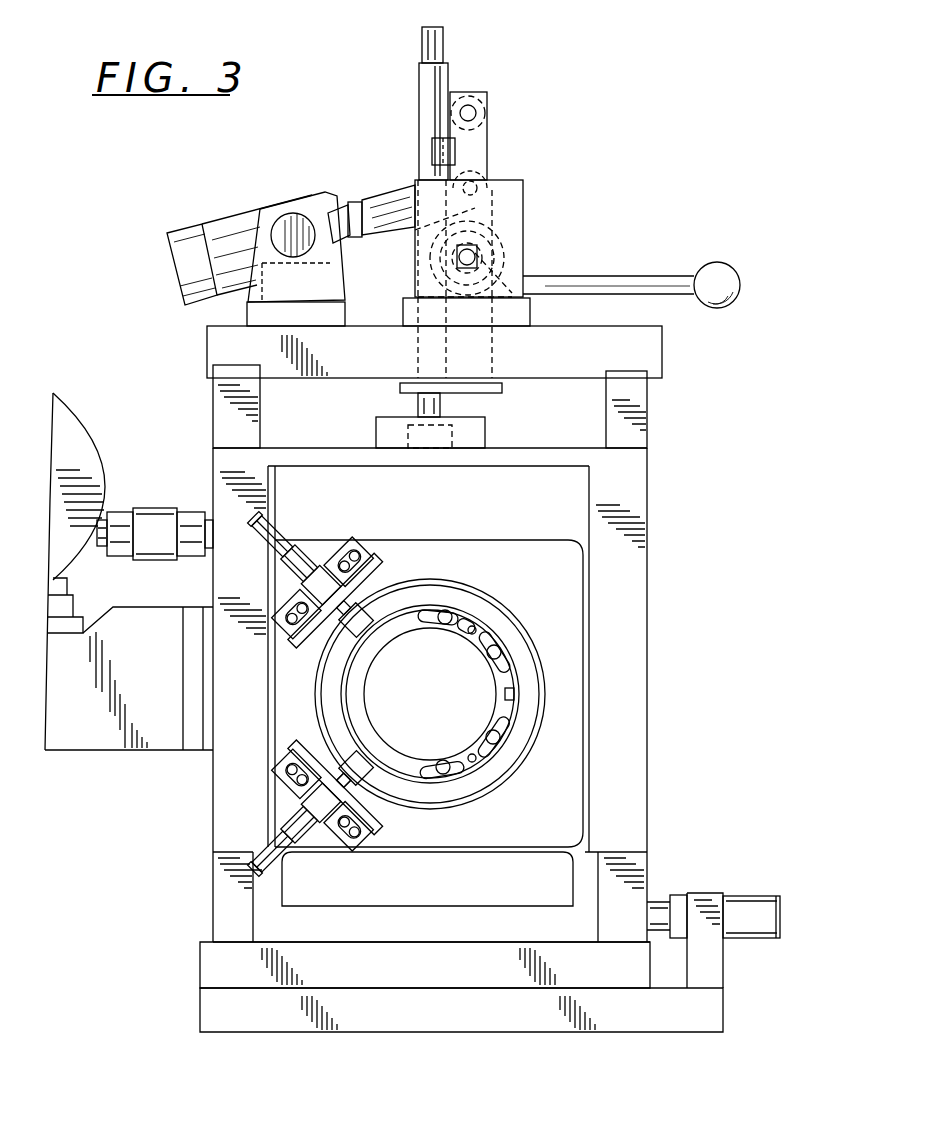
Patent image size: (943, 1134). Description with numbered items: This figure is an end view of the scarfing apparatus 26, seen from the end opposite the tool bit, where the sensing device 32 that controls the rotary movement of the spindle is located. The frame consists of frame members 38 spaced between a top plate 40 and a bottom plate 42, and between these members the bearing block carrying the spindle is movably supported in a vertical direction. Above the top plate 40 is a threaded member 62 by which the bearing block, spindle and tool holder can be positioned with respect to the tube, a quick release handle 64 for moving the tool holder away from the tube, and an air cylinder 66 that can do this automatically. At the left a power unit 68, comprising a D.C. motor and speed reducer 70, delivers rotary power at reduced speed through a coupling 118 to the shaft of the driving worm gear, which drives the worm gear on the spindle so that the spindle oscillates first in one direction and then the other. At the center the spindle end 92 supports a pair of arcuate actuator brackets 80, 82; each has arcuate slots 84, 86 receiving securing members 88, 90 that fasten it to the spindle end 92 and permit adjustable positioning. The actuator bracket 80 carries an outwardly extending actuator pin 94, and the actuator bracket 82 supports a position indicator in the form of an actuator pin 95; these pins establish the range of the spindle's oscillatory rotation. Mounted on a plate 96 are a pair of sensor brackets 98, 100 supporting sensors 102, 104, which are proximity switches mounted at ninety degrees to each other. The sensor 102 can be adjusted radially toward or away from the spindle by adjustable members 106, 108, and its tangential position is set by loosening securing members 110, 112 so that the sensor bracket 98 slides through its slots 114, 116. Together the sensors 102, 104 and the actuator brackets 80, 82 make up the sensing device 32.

The scarfing apparatus 26 is at (662, 774).
The sensing device 32 is at (318, 858).
The frame members 38 is at (213, 486).
The top plate 40 is at (662, 345).
The bottom plate 42 is at (200, 960).
The threaded member 62 is at (443, 36).
The quick release handle 64 is at (626, 284).
The air cylinder 66 is at (222, 222).
The power unit 68 is at (100, 418).
The speed reducer 70 is at (74, 538).
The actuator bracket 80 is at (495, 650).
The actuator bracket 82 is at (482, 748).
The arcuate slot 84 is at (487, 617).
The arcuate slot 86 is at (504, 670).
The securing member 88 is at (446, 614).
The securing member 90 is at (496, 655).
The spindle end 92 is at (360, 720).
The actuator pin 94 is at (474, 628).
The actuator pin 95 is at (474, 760).
The plate 96 is at (583, 687).
The sensor bracket 98 is at (326, 583).
The sensor bracket 100 is at (322, 814).
The sensor 102 is at (367, 613).
The sensor 104 is at (368, 764).
The adjustable member 106 is at (384, 547).
The adjustable member 108 is at (328, 638).
The securing member 110 is at (340, 546).
The securing member 112 is at (292, 606).
The slot 114 is at (352, 541).
The slot 116 is at (292, 632).
The coupling 118 is at (170, 562).